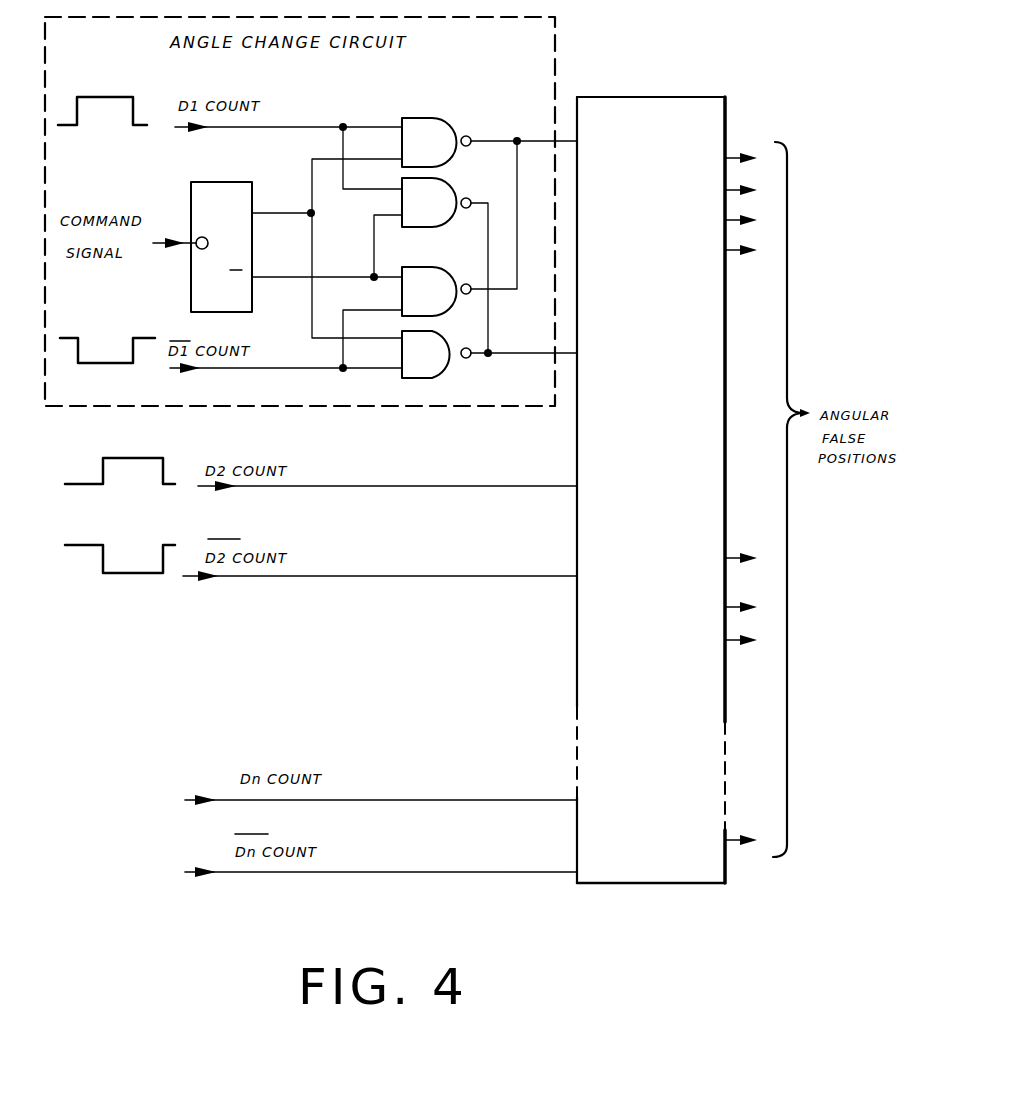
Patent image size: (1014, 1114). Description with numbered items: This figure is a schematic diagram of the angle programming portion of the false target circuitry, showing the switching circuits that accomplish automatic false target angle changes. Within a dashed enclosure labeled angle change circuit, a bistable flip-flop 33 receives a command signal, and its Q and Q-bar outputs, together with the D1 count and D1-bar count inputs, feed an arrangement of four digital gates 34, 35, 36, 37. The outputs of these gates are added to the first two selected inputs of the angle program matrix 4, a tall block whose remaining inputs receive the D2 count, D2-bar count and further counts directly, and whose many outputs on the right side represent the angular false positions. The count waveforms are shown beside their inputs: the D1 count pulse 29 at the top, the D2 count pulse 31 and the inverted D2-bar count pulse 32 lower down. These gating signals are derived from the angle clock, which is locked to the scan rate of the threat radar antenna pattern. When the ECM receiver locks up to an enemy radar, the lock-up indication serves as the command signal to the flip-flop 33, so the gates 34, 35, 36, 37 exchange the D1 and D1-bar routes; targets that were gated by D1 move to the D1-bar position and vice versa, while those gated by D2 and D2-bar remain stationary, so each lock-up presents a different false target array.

The angle program matrix 4 is at (660, 97).
The D1 count pulse 29 is at (124, 97).
The D2 count pulse 31 is at (135, 458).
The D2-bar count pulse 32 is at (133, 573).
The bistable flip-flop 33 is at (191, 268).
The digital gate 34 is at (440, 118).
The digital gate 35 is at (445, 179).
The digital gate 36 is at (463, 258).
The digital gate 37 is at (445, 378).